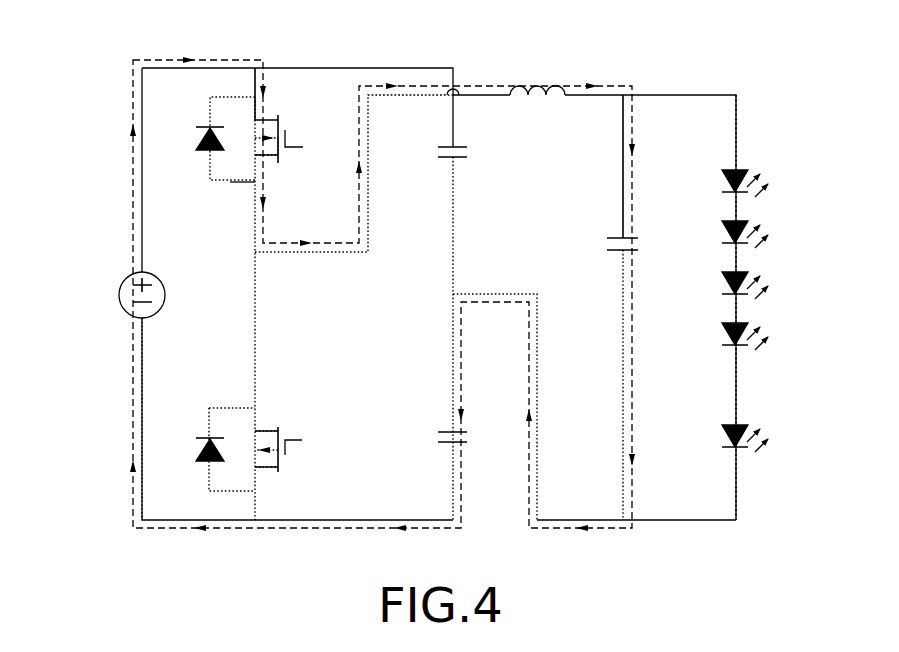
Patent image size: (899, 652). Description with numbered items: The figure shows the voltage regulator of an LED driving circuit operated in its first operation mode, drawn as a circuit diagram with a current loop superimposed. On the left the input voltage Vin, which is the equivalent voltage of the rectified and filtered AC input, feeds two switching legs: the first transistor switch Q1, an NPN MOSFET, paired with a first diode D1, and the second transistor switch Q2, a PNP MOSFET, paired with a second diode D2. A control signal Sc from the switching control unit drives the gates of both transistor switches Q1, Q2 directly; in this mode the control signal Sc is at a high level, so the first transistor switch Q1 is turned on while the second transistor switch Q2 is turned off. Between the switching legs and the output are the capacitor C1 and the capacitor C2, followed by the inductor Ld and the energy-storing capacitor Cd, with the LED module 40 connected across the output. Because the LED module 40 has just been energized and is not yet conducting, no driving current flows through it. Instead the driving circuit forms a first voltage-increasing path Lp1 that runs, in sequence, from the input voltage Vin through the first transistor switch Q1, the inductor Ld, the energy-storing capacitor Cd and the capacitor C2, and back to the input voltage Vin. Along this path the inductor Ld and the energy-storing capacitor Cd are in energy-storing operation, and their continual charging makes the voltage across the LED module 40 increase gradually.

The LED module 40 is at (776, 207).
The first voltage-increasing path Lp1 is at (158, 57).
The input voltage Vin is at (118, 295).
The first diode D1 is at (209, 154).
The second diode D2 is at (193, 450).
The first transistor switch Q1 is at (288, 115).
The second transistor switch Q2 is at (288, 458).
The control signal Sc is at (310, 294).
The capacitor C1 is at (471, 155).
The capacitor C2 is at (470, 440).
The energy-storing capacitor Cd is at (606, 176).
The inductor Ld is at (585, 108).